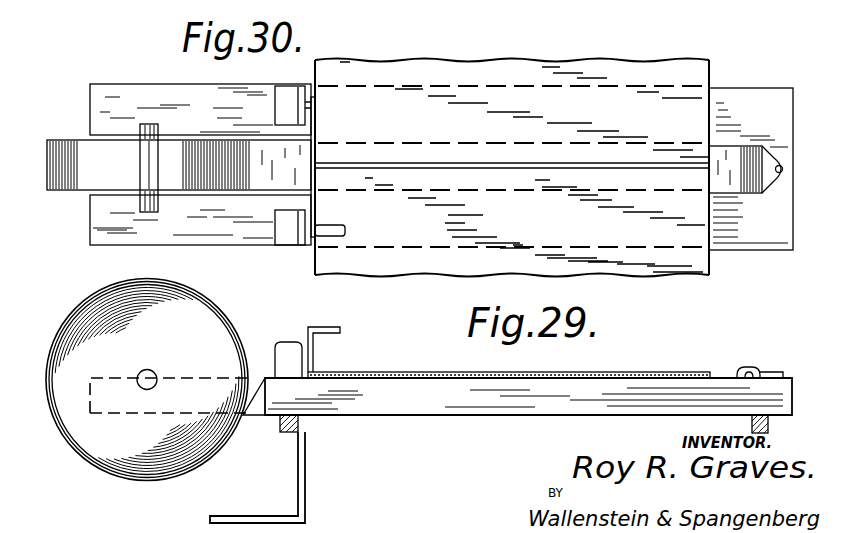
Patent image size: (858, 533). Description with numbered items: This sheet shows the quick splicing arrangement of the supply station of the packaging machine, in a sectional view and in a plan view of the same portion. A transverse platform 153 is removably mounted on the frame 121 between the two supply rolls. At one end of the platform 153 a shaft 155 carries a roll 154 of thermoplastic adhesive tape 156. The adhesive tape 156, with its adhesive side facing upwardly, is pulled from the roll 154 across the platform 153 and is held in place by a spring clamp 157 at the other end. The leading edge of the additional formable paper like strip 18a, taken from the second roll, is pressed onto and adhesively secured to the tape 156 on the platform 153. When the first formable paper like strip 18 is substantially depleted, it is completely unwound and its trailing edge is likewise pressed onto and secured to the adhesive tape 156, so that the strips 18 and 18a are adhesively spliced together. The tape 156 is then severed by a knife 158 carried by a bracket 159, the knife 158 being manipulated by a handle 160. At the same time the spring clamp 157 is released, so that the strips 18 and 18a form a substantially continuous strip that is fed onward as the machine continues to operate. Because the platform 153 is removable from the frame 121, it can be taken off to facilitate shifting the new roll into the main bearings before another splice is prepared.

In FIG. 30, the formable paper like strip 18 is at (486, 65).
In FIG. 30, the additional paper like strip 18a is at (427, 270).
In FIG. 29, the frame 121 is at (261, 517).
In FIG. 30, the transverse platform 153 is at (236, 241).
In FIG. 29, the transverse platform 153 is at (408, 408).
In FIG. 30, the roll of thermoplastic adhesive tape 154 is at (77, 181).
In FIG. 29, the roll of thermoplastic adhesive tape 154 is at (83, 315).
In FIG. 30, the shaft 155 is at (150, 124).
In FIG. 29, the shaft 155 is at (150, 376).
In FIG. 30, the adhesive tape 156 is at (288, 181).
In FIG. 29, the adhesive tape 156 is at (250, 448).
In FIG. 30, the spring clamp 157 is at (766, 212).
In FIG. 29, the spring clamp 157 is at (752, 367).
In FIG. 30, the knife 158 is at (316, 133).
In FIG. 29, the knife 158 is at (312, 356).
In FIG. 30, the bracket 159 is at (288, 109).
In FIG. 29, the bracket 159 is at (286, 345).
In FIG. 30, the handle 160 is at (345, 231).
In FIG. 29, the handle 160 is at (338, 327).